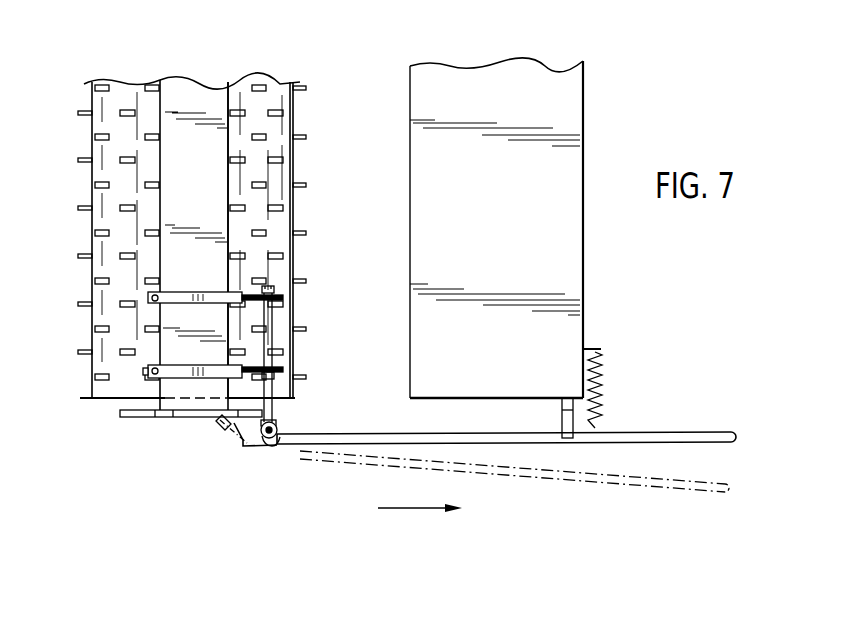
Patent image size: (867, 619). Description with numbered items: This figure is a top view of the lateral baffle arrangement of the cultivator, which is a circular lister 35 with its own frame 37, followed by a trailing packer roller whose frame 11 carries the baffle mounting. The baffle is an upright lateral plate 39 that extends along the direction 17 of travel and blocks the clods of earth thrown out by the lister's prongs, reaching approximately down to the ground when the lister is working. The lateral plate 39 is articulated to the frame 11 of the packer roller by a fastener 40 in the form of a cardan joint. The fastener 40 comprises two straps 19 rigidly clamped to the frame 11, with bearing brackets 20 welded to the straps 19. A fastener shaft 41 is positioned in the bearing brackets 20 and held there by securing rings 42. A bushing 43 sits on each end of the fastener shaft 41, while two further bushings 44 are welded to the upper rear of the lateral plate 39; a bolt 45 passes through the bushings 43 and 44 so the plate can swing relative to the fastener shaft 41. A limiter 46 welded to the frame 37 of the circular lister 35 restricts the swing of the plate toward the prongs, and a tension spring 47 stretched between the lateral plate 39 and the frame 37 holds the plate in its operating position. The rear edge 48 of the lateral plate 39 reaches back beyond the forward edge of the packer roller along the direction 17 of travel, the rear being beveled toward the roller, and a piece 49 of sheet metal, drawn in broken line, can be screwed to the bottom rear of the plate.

The frame 11 is at (198, 88).
The direction of travel 17 is at (400, 508).
The straps 19 is at (180, 365).
The bearing brackets 20 is at (228, 338).
The circular lister 35 is at (557, 110).
The frame 37 is at (506, 90).
The lateral plate 39 is at (673, 437).
The fastener 40 is at (284, 360).
The fastener shaft 41 is at (268, 313).
The securing rings 42 is at (270, 289).
The bushing 43 is at (280, 420).
The bushings 44 is at (278, 430).
The bolt 45 is at (270, 447).
The limiter 46 is at (572, 422).
The tension spring 47 is at (602, 375).
The rear edge 48 is at (238, 447).
The piece of sheet metal 49 is at (225, 430).